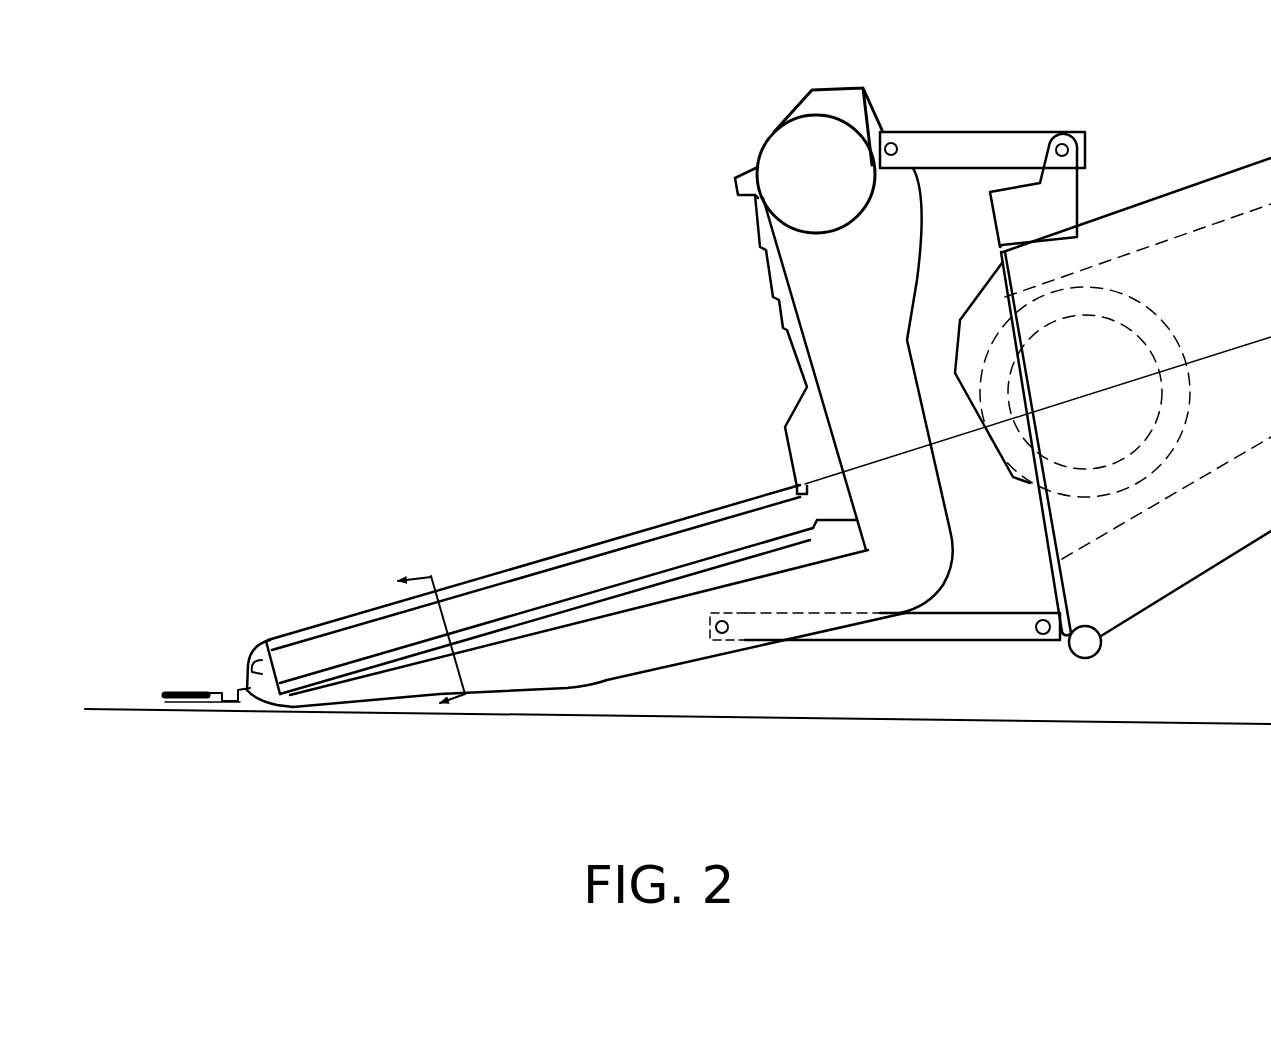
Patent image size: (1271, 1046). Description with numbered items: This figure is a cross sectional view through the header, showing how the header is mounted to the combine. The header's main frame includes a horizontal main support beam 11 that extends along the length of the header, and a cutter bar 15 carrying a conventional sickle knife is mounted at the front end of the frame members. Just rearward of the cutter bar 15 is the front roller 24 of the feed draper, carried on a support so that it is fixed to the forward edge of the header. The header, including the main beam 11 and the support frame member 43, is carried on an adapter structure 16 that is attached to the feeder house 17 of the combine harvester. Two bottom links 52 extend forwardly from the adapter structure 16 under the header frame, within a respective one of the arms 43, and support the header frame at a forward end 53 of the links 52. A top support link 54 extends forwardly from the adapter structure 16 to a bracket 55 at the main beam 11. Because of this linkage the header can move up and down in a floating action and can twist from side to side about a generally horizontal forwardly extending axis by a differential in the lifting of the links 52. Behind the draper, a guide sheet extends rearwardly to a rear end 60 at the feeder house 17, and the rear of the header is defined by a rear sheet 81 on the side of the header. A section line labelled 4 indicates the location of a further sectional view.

The main support beam 11 is at (762, 142).
The cutter bar 15 is at (230, 688).
The adapter structure 16 is at (1045, 213).
The feeder house 17 is at (1210, 211).
The front roller 24 is at (327, 657).
The support frame member 43 is at (583, 657).
The bottom links 52 is at (945, 627).
The forward end of the links 53 is at (716, 612).
The top support link 54 is at (970, 124).
The bracket 55 is at (880, 103).
The rear end of the guide sheet 60 is at (1071, 591).
The rear sheet 81 is at (773, 283).
The section line 4- 4 is at (442, 637).